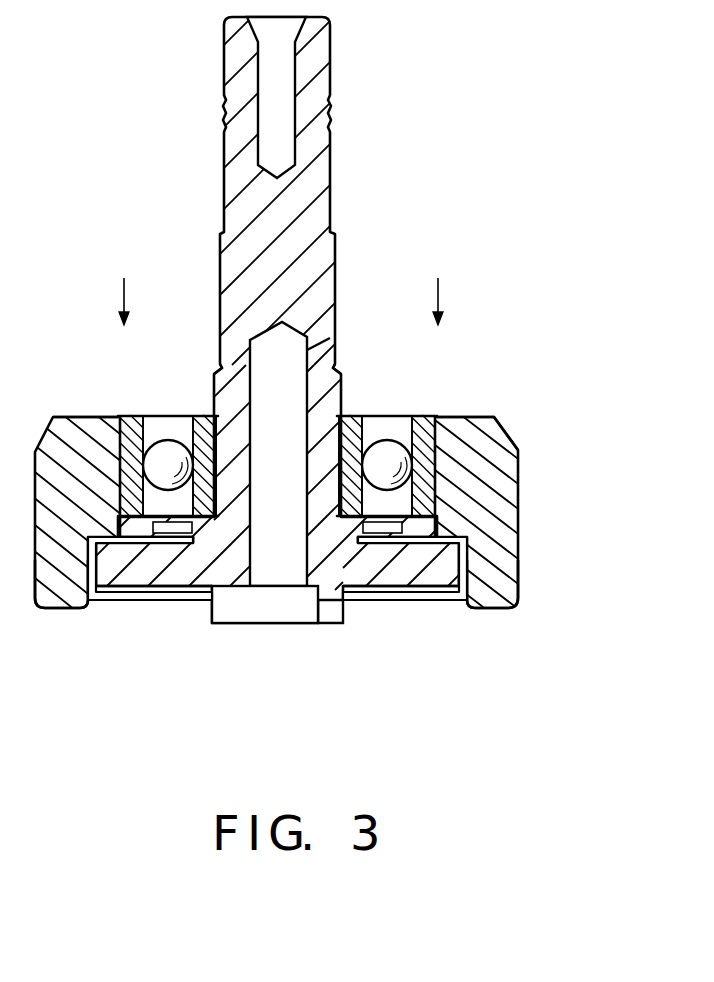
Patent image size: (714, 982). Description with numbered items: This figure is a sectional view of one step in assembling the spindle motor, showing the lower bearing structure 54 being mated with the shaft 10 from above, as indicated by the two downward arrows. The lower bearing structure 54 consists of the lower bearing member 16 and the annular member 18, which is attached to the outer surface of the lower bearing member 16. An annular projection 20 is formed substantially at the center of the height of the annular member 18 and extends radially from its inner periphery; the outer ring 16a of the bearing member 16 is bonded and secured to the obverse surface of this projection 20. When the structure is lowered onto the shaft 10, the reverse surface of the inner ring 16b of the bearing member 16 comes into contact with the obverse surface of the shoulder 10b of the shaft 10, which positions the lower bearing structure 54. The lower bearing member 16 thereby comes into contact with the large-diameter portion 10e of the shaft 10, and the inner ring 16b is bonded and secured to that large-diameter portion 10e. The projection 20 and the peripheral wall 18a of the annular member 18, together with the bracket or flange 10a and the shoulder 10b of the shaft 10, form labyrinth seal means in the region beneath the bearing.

The shaft 10 is at (330, 75).
The bracket or flange 10a is at (124, 580).
The shoulder 10b is at (199, 528).
The large-diameter portion 10e is at (347, 416).
The lower bearing member 16 is at (392, 415).
The outer ring 16a is at (128, 415).
The inner ring 16b is at (206, 415).
The annular member 18 is at (519, 494).
The peripheral wall 18a is at (65, 608).
The annular projection 20 is at (170, 532).
The lower bearing structure 54 is at (518, 432).